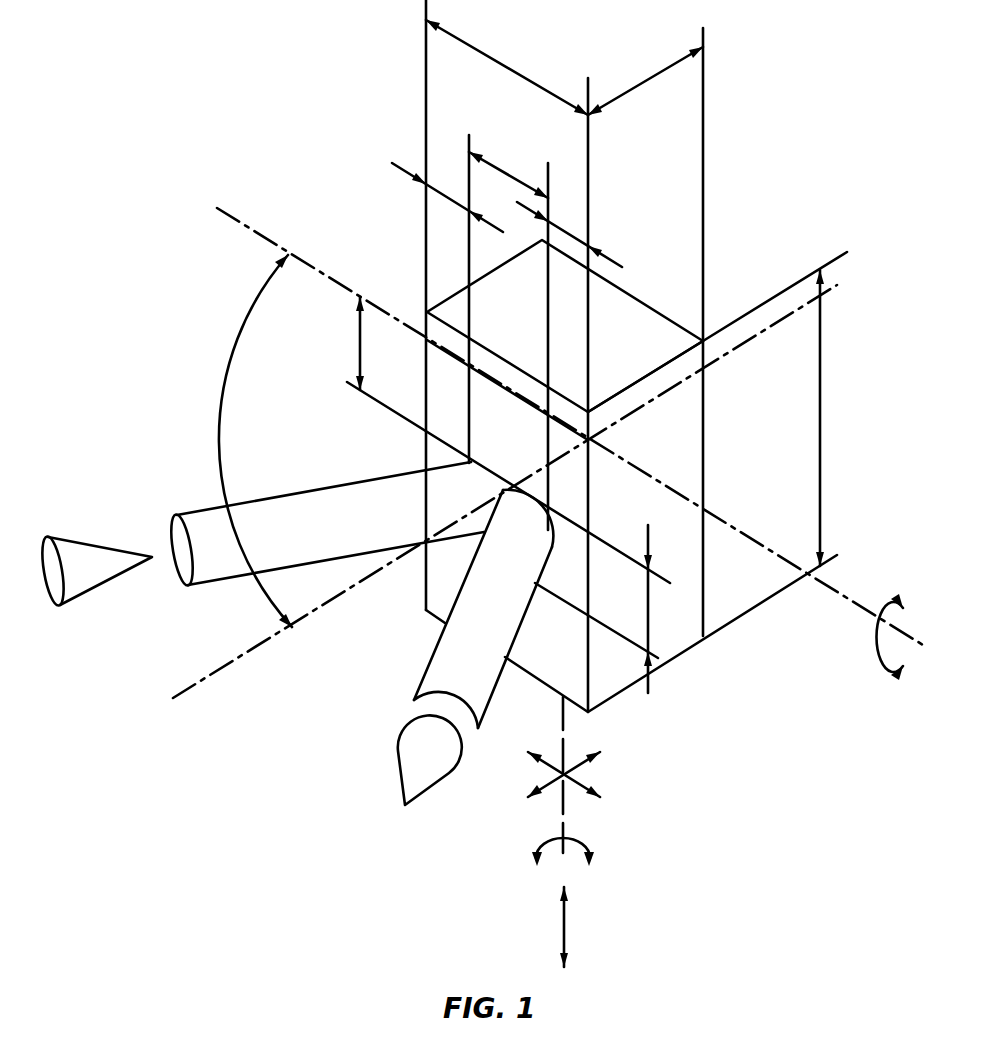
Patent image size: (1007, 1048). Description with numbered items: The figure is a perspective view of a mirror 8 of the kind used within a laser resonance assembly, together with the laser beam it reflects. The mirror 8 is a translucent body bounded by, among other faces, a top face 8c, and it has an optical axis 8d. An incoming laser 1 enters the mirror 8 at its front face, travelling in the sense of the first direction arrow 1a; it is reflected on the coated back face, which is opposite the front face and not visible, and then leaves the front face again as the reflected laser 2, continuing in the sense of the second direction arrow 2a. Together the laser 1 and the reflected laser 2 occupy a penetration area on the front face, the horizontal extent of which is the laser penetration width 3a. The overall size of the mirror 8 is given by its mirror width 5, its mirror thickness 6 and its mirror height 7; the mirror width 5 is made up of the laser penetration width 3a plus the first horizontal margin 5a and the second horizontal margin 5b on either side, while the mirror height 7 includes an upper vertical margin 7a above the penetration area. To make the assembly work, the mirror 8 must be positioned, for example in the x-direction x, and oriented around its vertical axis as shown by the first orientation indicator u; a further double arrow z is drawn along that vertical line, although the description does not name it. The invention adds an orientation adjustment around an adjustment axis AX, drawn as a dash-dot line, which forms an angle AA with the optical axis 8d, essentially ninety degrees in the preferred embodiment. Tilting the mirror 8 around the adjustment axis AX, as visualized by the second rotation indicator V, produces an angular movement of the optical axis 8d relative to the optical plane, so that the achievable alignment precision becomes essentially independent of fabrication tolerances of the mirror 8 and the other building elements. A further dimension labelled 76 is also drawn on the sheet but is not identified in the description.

The laser 1 is at (193, 522).
The first direction arrow 1a is at (80, 580).
The reflected laser 2 is at (428, 662).
The second direction arrow 2a is at (406, 768).
The laser penetration width 3a is at (506, 170).
The mirror width 5 is at (505, 64).
The first horizontal margin 5a is at (442, 190).
The second horizontal margin 5b is at (567, 222).
The mirror thickness 6 is at (639, 86).
The mirror height 7 is at (823, 453).
The upper vertical margin 7a is at (356, 328).
The mirror 8 is at (706, 450).
The top face 8c is at (653, 328).
The optical axis 8d is at (836, 260).
The slanted plate thickness 76 is at (650, 608).
The adjustment axis AX is at (253, 230).
The angle AA is at (244, 316).
The second rotation indicator V is at (895, 604).
The x-direction x is at (585, 765).
The first orientation indicator u is at (595, 843).
The z-direction movement z is at (568, 926).